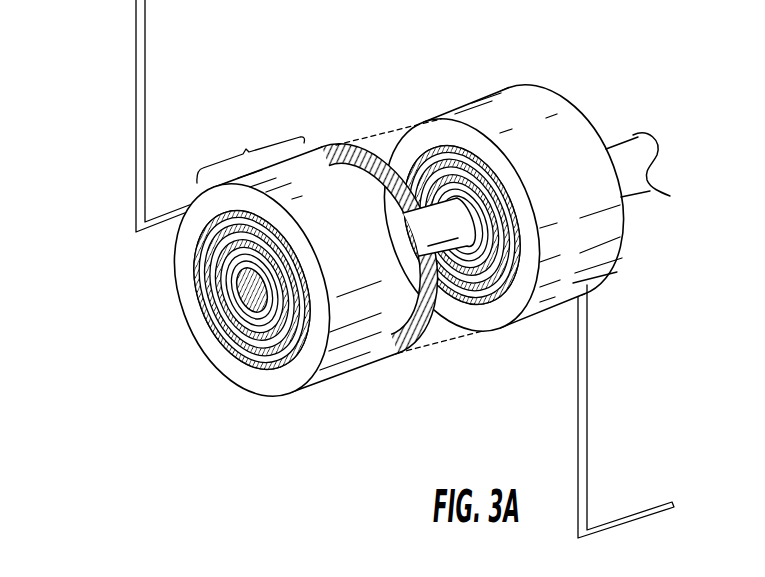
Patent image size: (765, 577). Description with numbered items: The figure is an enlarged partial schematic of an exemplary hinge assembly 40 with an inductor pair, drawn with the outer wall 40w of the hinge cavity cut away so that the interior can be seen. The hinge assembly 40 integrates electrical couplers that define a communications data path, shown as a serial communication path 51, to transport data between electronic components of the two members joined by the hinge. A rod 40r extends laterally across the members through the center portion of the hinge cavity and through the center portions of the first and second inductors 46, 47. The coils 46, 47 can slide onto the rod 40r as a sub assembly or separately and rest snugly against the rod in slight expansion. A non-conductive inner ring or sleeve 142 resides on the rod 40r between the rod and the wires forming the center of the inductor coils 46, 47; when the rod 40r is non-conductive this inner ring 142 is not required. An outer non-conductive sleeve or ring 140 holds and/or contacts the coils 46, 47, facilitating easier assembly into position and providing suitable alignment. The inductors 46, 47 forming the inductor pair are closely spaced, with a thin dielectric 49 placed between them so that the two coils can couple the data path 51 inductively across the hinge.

The hinge assembly 40 is at (392, 246).
The outer wall of the hinge cavity 40w is at (251, 147).
The rod 40r is at (247, 288).
The first transmit and receive serial communication path 51 is at (135, 143).
The outer non-conductive sleeve 140 is at (296, 372).
The inner ring or sleeve 142 is at (262, 345).
The first inductor 46 is at (268, 338).
The second inductor 47 is at (480, 305).
The thin dielectric 49 is at (417, 313).